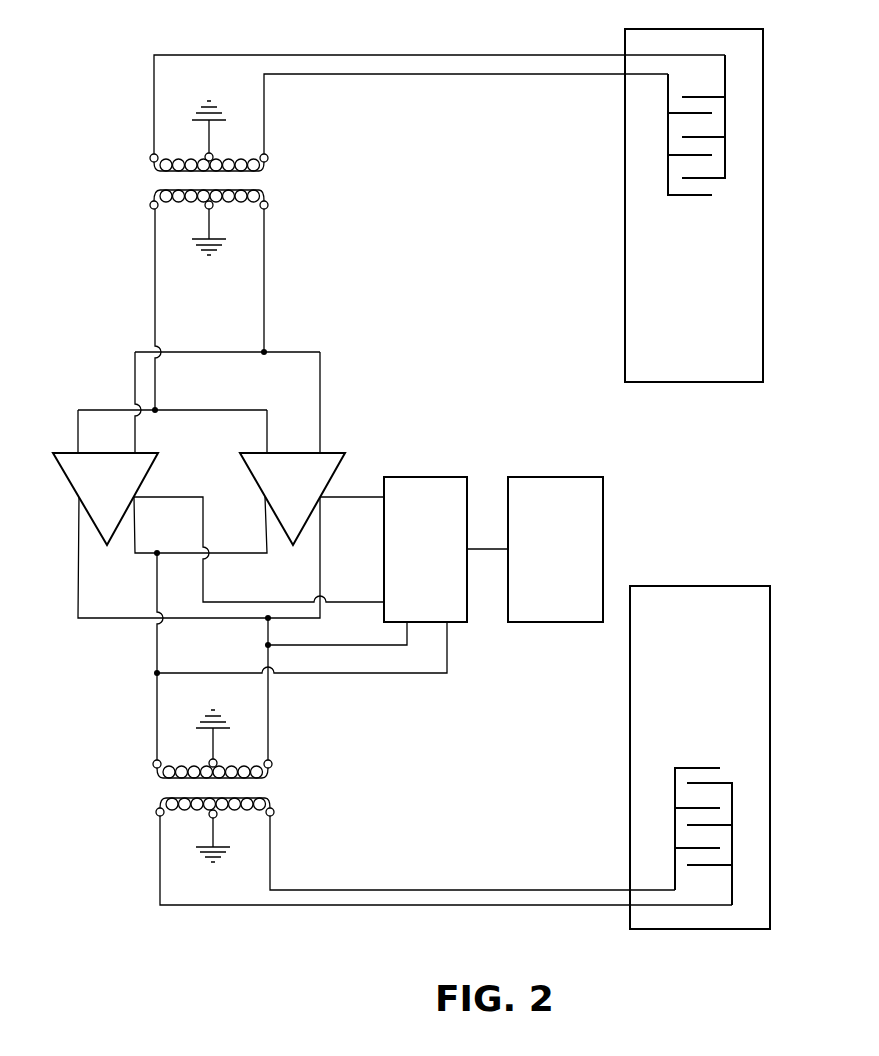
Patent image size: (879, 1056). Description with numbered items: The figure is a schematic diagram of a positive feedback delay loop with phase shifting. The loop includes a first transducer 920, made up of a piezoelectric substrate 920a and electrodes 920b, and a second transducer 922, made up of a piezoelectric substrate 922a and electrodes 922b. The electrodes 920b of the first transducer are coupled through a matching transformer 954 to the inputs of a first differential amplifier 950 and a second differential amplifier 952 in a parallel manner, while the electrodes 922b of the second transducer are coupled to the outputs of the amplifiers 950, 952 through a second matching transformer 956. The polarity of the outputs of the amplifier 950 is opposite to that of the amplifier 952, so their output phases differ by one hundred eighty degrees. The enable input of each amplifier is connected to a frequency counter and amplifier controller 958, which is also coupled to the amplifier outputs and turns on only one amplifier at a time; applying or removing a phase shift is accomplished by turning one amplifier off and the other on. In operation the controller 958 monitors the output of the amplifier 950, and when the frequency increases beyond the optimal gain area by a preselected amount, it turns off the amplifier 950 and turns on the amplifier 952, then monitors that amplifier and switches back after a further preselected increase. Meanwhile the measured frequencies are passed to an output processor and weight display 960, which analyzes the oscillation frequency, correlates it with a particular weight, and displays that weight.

The first transducer 920 is at (695, 205).
The piezoelectric substrate 920a is at (755, 292).
The electrodes 920b is at (725, 124).
The second transducer 922 is at (699, 757).
The piezoelectric substrate 922a is at (762, 658).
The electrodes 922b is at (733, 848).
The first differential amplifier 950 is at (292, 499).
The second differential amplifier 952 is at (105, 499).
The matching transformer 954 is at (152, 181).
The matching transformer 956 is at (160, 790).
The frequency counter and amplifier controller 958 is at (425, 549).
The output processor and weight display 960 is at (555, 549).